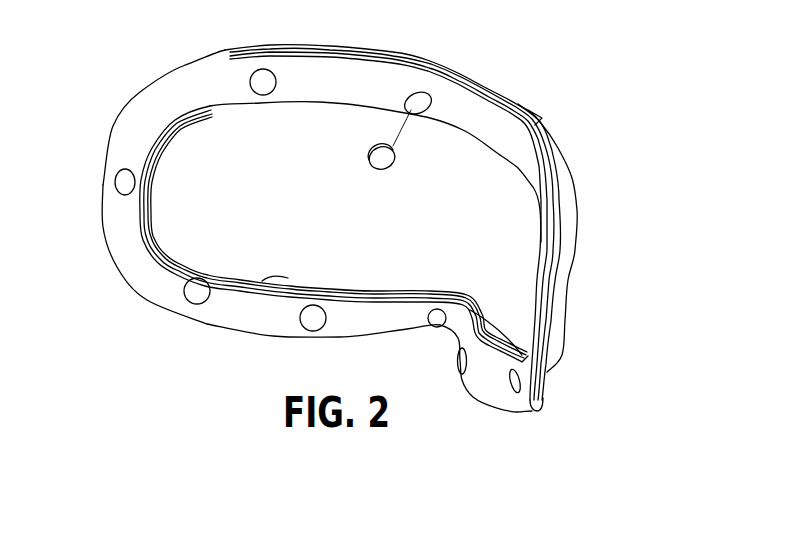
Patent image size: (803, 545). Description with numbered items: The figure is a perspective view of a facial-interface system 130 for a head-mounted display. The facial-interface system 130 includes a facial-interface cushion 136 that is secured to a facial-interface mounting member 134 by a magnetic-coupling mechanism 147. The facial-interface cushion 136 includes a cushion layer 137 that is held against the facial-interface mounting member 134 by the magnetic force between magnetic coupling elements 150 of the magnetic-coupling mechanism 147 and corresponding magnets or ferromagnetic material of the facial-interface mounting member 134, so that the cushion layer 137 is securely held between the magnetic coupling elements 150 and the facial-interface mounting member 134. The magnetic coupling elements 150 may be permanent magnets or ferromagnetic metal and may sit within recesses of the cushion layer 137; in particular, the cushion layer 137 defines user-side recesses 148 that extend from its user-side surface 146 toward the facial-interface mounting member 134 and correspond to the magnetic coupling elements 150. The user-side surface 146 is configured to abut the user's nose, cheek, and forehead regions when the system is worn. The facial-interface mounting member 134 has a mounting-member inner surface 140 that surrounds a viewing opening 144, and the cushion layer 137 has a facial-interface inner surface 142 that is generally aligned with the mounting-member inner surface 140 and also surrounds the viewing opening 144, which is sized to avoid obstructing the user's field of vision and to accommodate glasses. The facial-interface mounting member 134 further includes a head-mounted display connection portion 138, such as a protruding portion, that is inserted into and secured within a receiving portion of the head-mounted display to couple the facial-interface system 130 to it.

The facial-interface system 130 is at (86, 71).
The facial-interface mounting member 134 is at (482, 90).
The facial-interface cushion 136 is at (117, 273).
The cushion layer 137 is at (117, 130).
The head-mounted display connection portion 138 is at (574, 177).
The mounting-member inner surface 140 is at (202, 262).
The facial-interface inner surface 142 is at (141, 217).
The viewing opening 144 is at (196, 106).
The user-side surface 146 is at (340, 82).
The magnetic-coupling mechanism 147 is at (113, 357).
The user-side recess 148 is at (412, 92).
The magnetic coupling element 150 is at (263, 80).